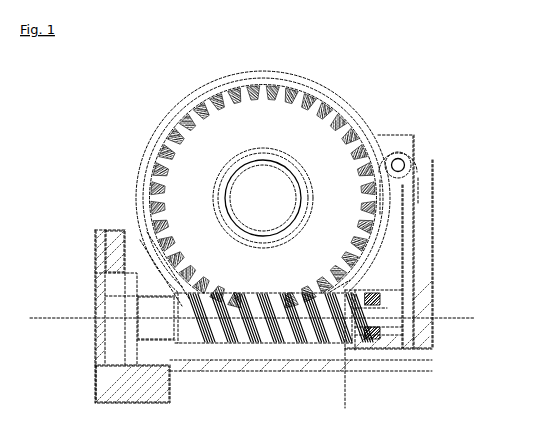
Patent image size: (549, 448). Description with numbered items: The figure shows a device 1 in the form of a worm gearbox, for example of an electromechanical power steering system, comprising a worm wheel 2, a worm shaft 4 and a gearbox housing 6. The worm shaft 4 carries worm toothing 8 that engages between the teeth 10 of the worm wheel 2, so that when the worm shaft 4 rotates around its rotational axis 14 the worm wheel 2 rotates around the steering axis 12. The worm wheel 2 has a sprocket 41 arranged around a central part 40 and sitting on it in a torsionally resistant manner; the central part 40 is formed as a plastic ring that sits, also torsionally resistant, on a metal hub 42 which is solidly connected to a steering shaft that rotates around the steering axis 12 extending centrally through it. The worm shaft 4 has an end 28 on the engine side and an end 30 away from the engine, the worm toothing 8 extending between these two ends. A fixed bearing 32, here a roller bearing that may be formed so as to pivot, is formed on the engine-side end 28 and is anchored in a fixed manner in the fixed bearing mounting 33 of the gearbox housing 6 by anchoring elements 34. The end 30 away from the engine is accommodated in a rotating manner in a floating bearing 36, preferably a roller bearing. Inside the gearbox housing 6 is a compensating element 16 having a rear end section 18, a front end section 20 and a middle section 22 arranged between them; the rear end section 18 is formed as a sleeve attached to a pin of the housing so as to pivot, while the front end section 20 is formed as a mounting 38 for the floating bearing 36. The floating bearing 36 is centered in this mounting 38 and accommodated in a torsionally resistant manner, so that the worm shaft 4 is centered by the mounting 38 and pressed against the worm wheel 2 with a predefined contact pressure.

The device 1 is at (459, 58).
The worm wheel 2 is at (273, 120).
The worm shaft 4 is at (184, 302).
The gearbox housing 6 is at (372, 133).
The worm toothing 8 is at (212, 336).
The teeth 10 is at (246, 92).
The steering axis 12 is at (260, 190).
The rotational axis 14 is at (40, 313).
The compensating element 16 is at (397, 244).
The rear end section 18 is at (407, 160).
The front end section 20 is at (388, 302).
The middle section 22 is at (417, 220).
The end on the engine side 28 is at (153, 329).
The end away from the engine 30 is at (367, 324).
The fixed bearing 32 is at (118, 287).
The fixed bearing mounting 33 is at (117, 371).
The anchoring elements 34 is at (102, 265).
The floating bearing 36 is at (375, 295).
The mounting 38 is at (382, 354).
The central part 40 is at (287, 165).
The sprocket 41 is at (195, 160).
The metal hub 42 is at (293, 173).